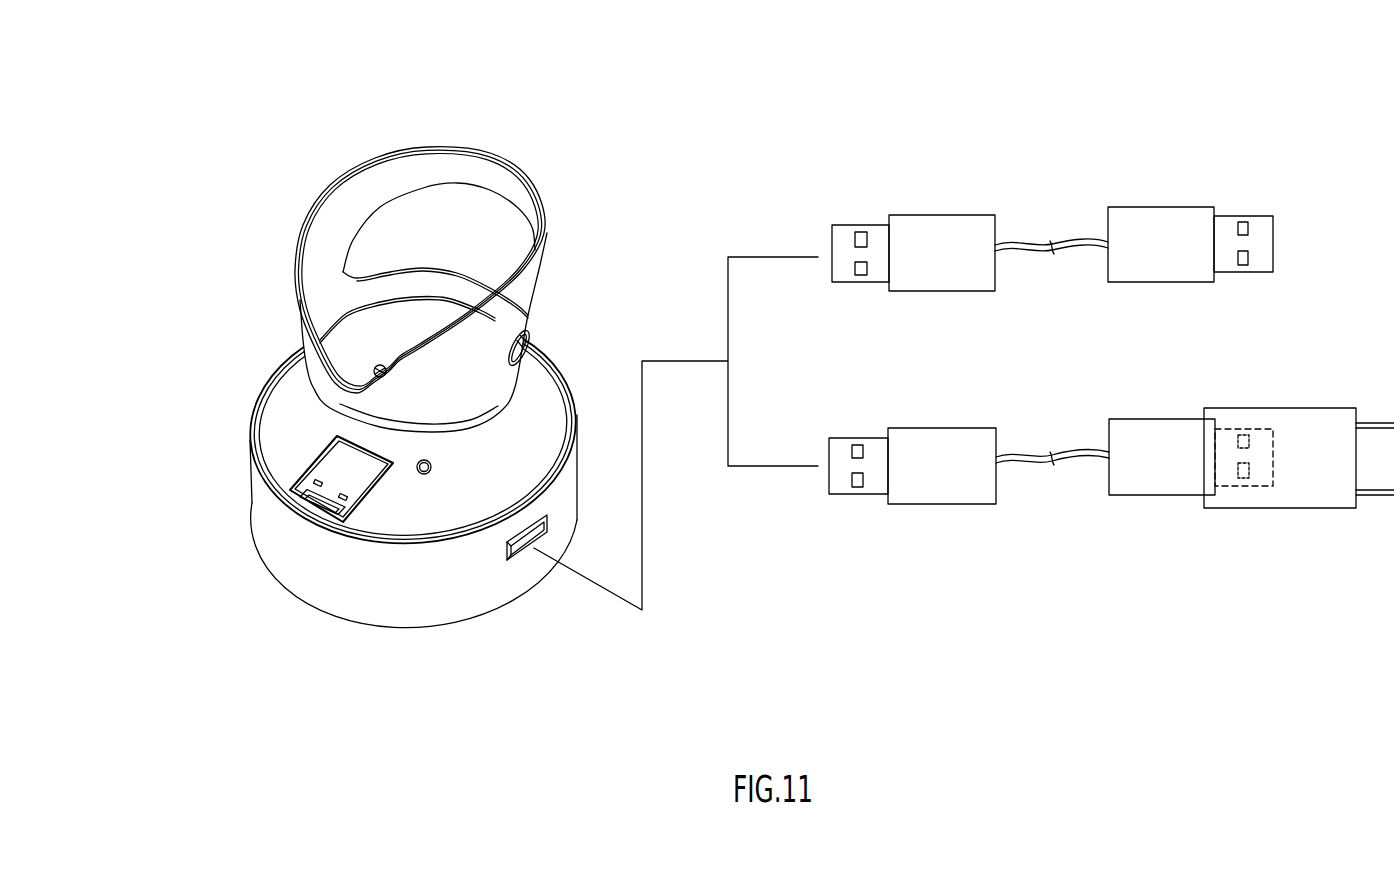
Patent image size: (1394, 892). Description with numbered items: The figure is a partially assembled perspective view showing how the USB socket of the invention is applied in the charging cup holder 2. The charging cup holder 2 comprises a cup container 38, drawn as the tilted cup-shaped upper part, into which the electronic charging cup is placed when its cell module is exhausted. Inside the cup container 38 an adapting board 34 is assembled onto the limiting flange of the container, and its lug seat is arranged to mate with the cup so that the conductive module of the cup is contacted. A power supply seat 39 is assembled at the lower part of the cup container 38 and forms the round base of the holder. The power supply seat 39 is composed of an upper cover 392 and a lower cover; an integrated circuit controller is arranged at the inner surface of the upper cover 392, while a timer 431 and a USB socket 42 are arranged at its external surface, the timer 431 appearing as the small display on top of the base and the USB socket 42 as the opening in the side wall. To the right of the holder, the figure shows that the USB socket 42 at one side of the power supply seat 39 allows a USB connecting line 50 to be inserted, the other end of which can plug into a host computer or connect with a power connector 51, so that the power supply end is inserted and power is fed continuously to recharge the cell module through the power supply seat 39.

The charging cup holder 2 is at (272, 177).
The adapting board 34 is at (365, 325).
The cup container 38 is at (296, 322).
The power supply seat 39 is at (232, 438).
The upper cover 392 is at (267, 397).
The timer 431 is at (315, 503).
The USB socket 42 is at (526, 552).
The USB connecting line 50 is at (943, 215).
The power connector 51 is at (1247, 508).